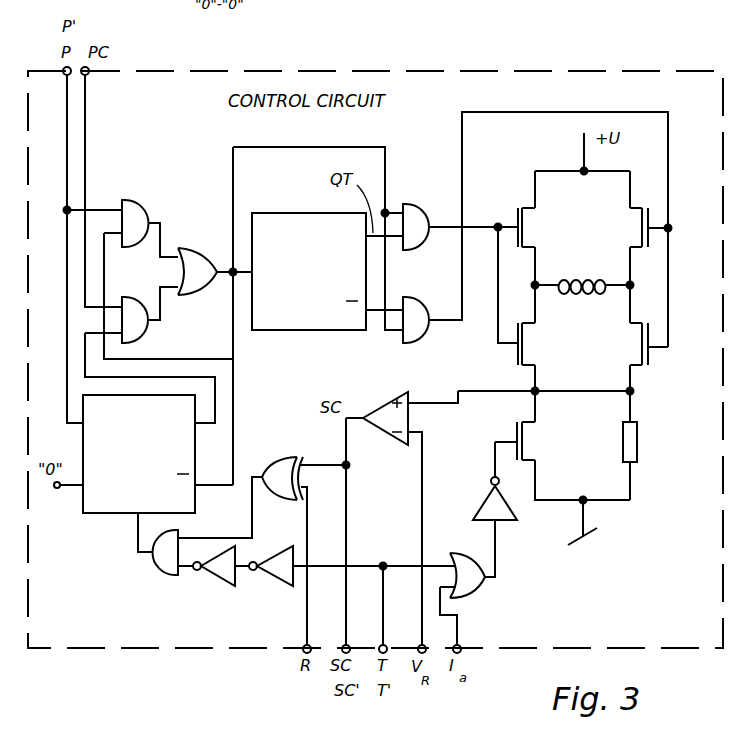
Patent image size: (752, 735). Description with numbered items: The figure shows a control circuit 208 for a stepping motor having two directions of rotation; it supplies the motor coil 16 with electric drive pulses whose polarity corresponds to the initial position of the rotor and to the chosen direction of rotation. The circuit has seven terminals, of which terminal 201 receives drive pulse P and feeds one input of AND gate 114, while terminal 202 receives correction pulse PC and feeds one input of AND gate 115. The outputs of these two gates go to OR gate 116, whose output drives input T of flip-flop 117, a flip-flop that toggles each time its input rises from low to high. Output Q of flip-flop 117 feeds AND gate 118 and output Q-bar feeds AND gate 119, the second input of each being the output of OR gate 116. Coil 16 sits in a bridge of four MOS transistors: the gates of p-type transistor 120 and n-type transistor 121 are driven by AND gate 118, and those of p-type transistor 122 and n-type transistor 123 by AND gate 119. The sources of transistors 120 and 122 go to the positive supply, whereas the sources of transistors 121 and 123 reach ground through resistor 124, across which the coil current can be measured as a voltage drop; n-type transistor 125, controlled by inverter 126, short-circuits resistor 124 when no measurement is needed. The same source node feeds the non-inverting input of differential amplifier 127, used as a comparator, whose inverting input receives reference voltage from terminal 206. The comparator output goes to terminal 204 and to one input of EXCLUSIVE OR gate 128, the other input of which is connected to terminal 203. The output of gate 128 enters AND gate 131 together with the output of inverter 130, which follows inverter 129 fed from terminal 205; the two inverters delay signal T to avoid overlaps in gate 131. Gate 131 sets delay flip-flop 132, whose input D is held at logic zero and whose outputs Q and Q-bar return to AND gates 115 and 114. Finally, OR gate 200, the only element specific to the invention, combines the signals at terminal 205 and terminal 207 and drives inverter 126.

The motor coil 16 is at (585, 277).
The AND gate 114 is at (133, 200).
The AND gate 115 is at (140, 330).
The OR gate 116 is at (193, 250).
The flip-flop 117 is at (272, 322).
The AND gate 118 is at (415, 200).
The AND gate 119 is at (416, 303).
The MOS control transistor 120 is at (518, 207).
The MOS control transistor 121 is at (520, 363).
The MOS control transistor 122 is at (632, 215).
The MOS control transistor 123 is at (635, 353).
The resistor 124 is at (637, 440).
The transistor 125 is at (517, 432).
The inverter 126 is at (482, 507).
The differential amplifier 127 is at (387, 430).
The EXCLUSIVE OR gate 128 is at (280, 462).
The inverter 129 is at (285, 573).
The inverter 130 is at (222, 573).
The AND gate 131 is at (158, 571).
The delay flip-flop 132 is at (100, 503).
The OR gate 200 is at (480, 588).
The terminal 201 is at (66, 76).
The terminal 202 is at (88, 76).
The terminal 203 is at (300, 645).
The terminal 204 is at (340, 645).
The terminal 205 is at (378, 645).
The terminal 206 is at (415, 645).
The terminal 207 is at (462, 646).
The control circuit 208 is at (624, 82).